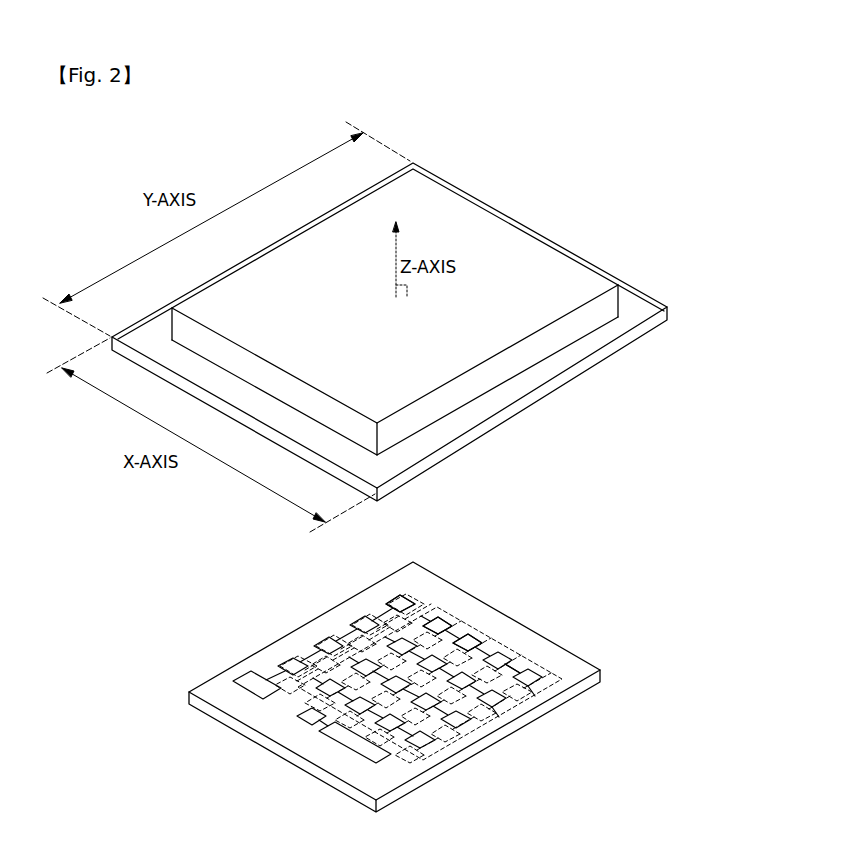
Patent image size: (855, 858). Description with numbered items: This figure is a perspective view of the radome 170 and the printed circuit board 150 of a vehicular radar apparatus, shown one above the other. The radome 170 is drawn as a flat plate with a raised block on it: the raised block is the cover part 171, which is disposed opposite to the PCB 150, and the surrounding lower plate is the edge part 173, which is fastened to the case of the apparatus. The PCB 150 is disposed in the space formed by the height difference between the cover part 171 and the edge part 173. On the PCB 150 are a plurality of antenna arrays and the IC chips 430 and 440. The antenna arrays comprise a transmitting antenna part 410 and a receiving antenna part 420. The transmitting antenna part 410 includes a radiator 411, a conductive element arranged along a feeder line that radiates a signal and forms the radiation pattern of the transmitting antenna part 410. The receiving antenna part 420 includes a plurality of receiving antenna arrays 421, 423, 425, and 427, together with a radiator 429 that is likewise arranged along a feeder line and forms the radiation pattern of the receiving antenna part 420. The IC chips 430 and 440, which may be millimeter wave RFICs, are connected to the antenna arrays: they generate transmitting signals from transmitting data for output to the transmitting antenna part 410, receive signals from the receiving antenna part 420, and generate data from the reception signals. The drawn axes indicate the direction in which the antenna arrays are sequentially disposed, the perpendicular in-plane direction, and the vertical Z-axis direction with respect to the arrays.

The printed circuit board 150 is at (577, 670).
The radome 170 is at (447, 332).
The cover part 171 is at (586, 268).
The edge part 173 is at (654, 312).
The transmitting antenna part 410 is at (390, 606).
The radiator 411 is at (392, 601).
The receiving antenna part 420 is at (453, 678).
The receiving antenna array 421 is at (452, 614).
The receiving antenna array 423 is at (480, 634).
The receiving antenna array 425 is at (513, 653).
The receiving antenna array 427 is at (550, 672).
The radiator 429 is at (513, 708).
The IC chip 430 is at (245, 678).
The IC chip 440 is at (335, 737).